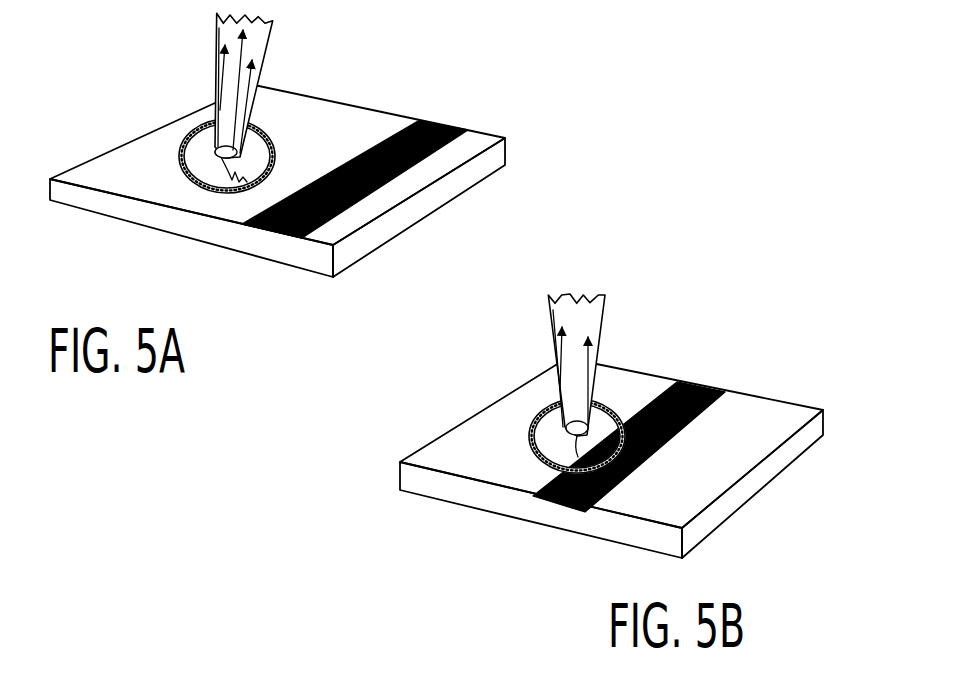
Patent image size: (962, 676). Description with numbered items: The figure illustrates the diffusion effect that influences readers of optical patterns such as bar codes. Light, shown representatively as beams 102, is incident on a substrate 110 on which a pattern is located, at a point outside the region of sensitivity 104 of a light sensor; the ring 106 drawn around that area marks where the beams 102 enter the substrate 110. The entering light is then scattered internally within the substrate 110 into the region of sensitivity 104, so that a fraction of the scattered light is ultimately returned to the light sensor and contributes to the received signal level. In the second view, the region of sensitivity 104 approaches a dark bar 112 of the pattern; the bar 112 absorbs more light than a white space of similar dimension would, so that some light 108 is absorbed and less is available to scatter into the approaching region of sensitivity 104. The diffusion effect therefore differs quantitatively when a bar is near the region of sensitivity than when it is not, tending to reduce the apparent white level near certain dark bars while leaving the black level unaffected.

In FIG. 5A, the beams 102 is at (246, 181).
In FIG. 5B, the beams 102 is at (589, 434).
In FIG. 5A, the region of sensitivity 104 is at (222, 147).
In FIG. 5B, the region of sensitivity 104 is at (575, 441).
In FIG. 5A, the ring 106 is at (203, 155).
In FIG. 5B, the ring 106 is at (552, 423).
In FIG. 5B, the light 108 is at (595, 440).
In FIG. 5A, the substrate 110 is at (247, 238).
In FIG. 5A, the dark bar 112 is at (387, 140).
In FIG. 5B, the dark bar 112 is at (700, 386).